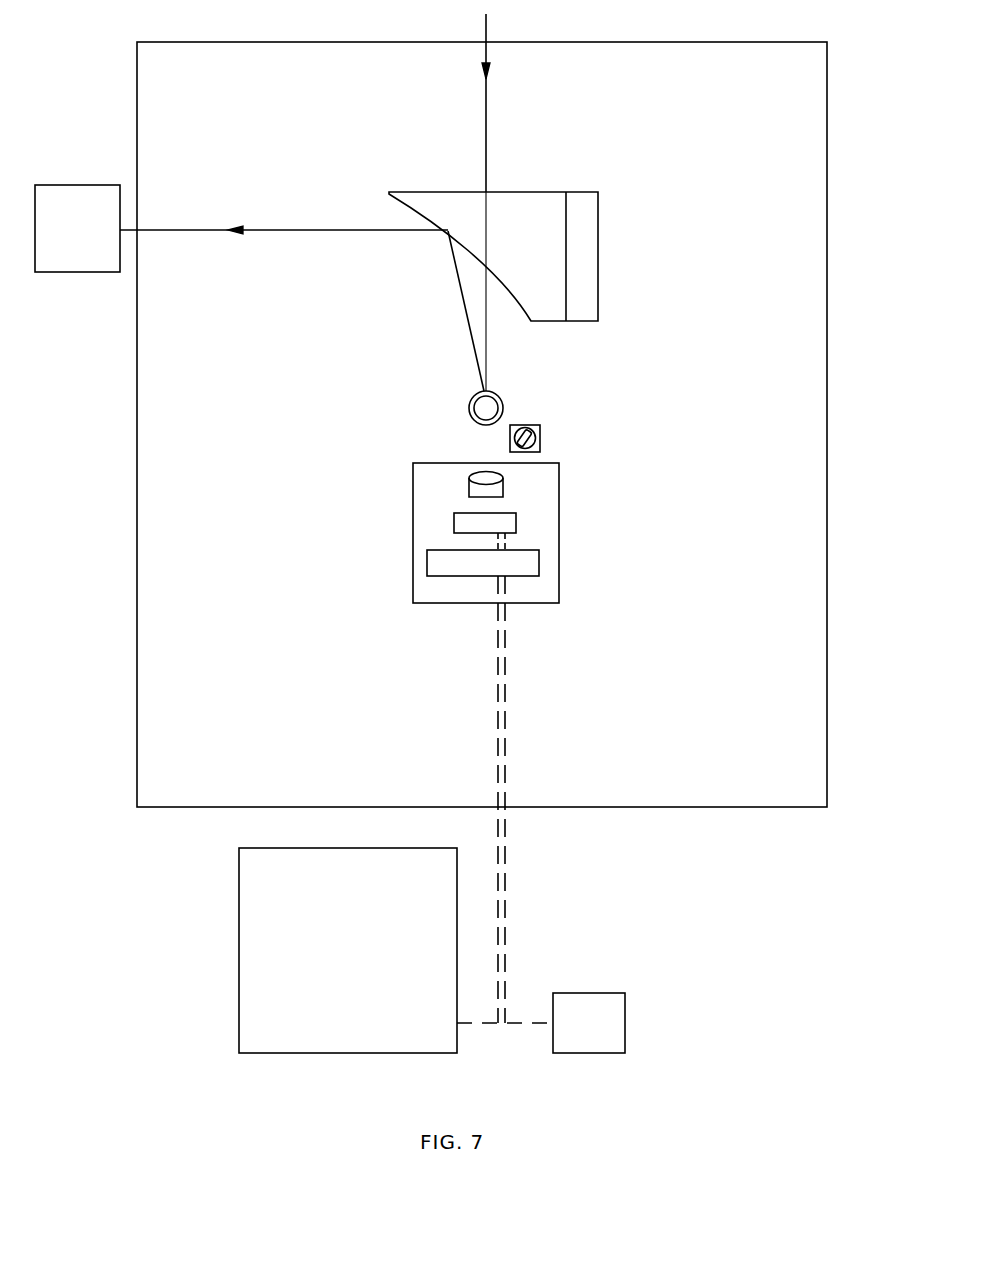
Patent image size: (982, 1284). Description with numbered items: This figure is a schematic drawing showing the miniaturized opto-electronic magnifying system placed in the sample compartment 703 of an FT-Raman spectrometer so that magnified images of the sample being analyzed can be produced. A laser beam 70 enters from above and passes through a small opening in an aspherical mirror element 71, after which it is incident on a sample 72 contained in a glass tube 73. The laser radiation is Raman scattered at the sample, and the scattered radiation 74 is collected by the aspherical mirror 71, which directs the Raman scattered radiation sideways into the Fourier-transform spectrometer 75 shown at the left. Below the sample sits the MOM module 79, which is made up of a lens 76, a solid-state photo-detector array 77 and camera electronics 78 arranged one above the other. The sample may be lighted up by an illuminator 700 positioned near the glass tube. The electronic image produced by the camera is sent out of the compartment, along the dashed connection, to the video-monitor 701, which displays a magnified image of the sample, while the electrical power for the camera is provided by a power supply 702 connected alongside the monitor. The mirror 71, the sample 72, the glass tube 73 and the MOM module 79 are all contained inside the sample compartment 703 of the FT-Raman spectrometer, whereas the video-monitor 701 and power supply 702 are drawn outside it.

The laser beam 70 is at (479, 98).
The aspherical mirror element 71 is at (601, 253).
The sample 72 is at (503, 402).
The glass tube 73 is at (469, 408).
The scattered radiation 74 is at (458, 307).
The Fourier-transform spectrometer 75 is at (241, 228).
The lens 76 is at (467, 486).
The solid-state photo-detector array 77 is at (454, 522).
The camera electronics 78 is at (427, 563).
The MOM module 79 is at (565, 534).
The illuminator 700 is at (543, 439).
The video-monitor 701 is at (348, 950).
The power supply 702 is at (589, 1023).
The sample compartment 703 is at (595, 813).